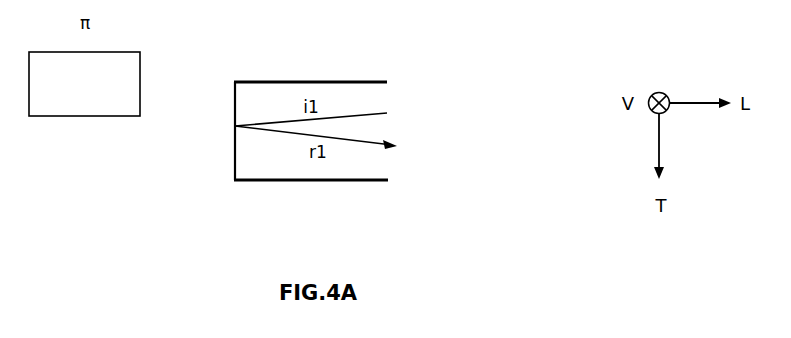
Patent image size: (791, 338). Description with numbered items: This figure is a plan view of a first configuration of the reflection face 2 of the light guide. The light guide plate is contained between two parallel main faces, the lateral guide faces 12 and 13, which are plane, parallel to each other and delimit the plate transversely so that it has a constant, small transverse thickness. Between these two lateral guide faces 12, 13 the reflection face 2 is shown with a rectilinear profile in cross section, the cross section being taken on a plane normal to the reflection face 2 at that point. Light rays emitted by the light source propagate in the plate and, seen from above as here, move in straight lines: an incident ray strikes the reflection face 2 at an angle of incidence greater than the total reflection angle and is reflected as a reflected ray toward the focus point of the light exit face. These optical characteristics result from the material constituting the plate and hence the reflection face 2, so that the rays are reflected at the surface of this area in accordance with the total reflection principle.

The reflection face 2 is at (235, 166).
The lateral guide face 12 is at (365, 82).
The lateral guide face 13 is at (378, 180).